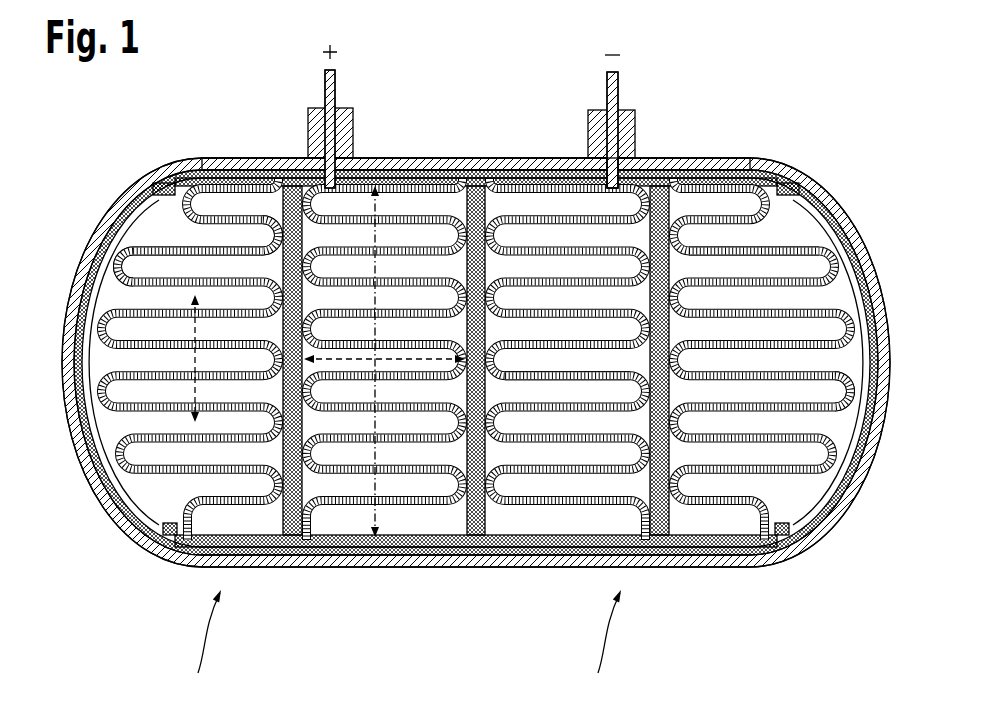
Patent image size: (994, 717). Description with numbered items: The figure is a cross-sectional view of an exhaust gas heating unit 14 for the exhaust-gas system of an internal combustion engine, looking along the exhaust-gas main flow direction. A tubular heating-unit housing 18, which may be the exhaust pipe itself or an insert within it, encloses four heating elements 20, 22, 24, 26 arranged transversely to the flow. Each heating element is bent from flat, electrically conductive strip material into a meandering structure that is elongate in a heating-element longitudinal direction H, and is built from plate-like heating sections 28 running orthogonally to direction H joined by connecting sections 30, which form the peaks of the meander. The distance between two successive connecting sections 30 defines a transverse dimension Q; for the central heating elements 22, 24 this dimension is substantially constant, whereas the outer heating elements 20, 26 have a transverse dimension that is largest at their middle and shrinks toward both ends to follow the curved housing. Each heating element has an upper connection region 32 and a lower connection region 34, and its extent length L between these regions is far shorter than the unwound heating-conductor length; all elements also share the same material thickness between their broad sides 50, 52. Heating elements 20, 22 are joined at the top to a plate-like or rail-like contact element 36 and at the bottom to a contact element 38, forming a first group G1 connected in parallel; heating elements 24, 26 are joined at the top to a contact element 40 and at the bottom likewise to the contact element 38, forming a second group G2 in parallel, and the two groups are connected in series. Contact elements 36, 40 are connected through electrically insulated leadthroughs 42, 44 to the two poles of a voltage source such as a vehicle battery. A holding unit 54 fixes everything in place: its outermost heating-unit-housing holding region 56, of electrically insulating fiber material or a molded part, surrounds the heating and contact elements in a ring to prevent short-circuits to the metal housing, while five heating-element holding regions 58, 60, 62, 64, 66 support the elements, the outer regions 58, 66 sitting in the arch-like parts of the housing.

The exhaust gas heating unit 14 is at (805, 117).
The heating-unit housing 18 is at (781, 553).
The heating element 20 is at (150, 353).
The heating element 22 is at (413, 503).
The heating element 24 is at (590, 263).
The heating element 26 is at (768, 306).
The heating section 28 is at (160, 250).
The connecting section 30 is at (273, 230).
The connection region 32 is at (778, 196).
The connection region 34 is at (695, 545).
The contact element 36 is at (270, 174).
The contact element 38 is at (484, 536).
The contact element 40 is at (717, 180).
The leadthrough 42 is at (336, 94).
The leadthrough 44 is at (617, 95).
The broad side 50 is at (545, 222).
The broad side 52 is at (622, 207).
The holding unit 54 is at (103, 483).
The heating-unit-housing holding region 56 is at (808, 523).
The heating-element holding region 58 is at (140, 517).
The heating-element holding region 60 is at (292, 520).
The heating-element holding region 62 is at (487, 389).
The heating-element holding region 64 is at (662, 390).
The heating-element holding region 66 is at (853, 413).
The heating-element longitudinal direction H is at (183, 390).
The extent length L is at (373, 487).
The transverse dimension Q is at (410, 356).
The first group of heating elements G1 is at (192, 646).
The second group of heating elements G2 is at (592, 646).